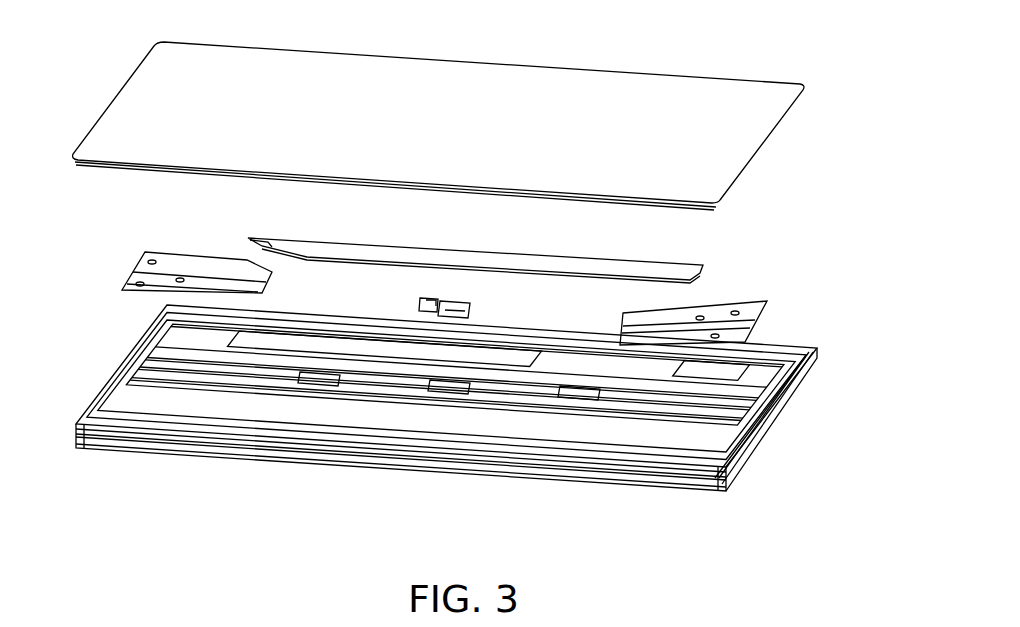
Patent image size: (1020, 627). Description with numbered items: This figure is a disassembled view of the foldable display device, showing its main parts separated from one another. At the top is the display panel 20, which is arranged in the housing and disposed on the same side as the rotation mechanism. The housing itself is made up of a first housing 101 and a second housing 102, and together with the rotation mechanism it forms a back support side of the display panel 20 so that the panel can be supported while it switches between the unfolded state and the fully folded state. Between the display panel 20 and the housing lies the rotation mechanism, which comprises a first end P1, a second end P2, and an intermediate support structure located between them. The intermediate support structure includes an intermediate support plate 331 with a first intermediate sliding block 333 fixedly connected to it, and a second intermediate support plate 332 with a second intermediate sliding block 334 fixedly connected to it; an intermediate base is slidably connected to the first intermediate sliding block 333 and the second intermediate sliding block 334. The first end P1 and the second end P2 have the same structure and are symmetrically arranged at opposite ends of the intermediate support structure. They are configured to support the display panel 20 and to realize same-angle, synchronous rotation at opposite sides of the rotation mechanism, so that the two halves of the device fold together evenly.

The display panel 20 is at (689, 70).
The intermediate support plate 331 is at (710, 261).
The second intermediate support plate 332 is at (172, 326).
The first intermediate sliding block 333 is at (469, 305).
The second intermediate sliding block 334 is at (419, 296).
The first end P1 is at (141, 252).
The second end P2 is at (774, 303).
The first housing 101 is at (729, 495).
The second housing 102 is at (801, 402).